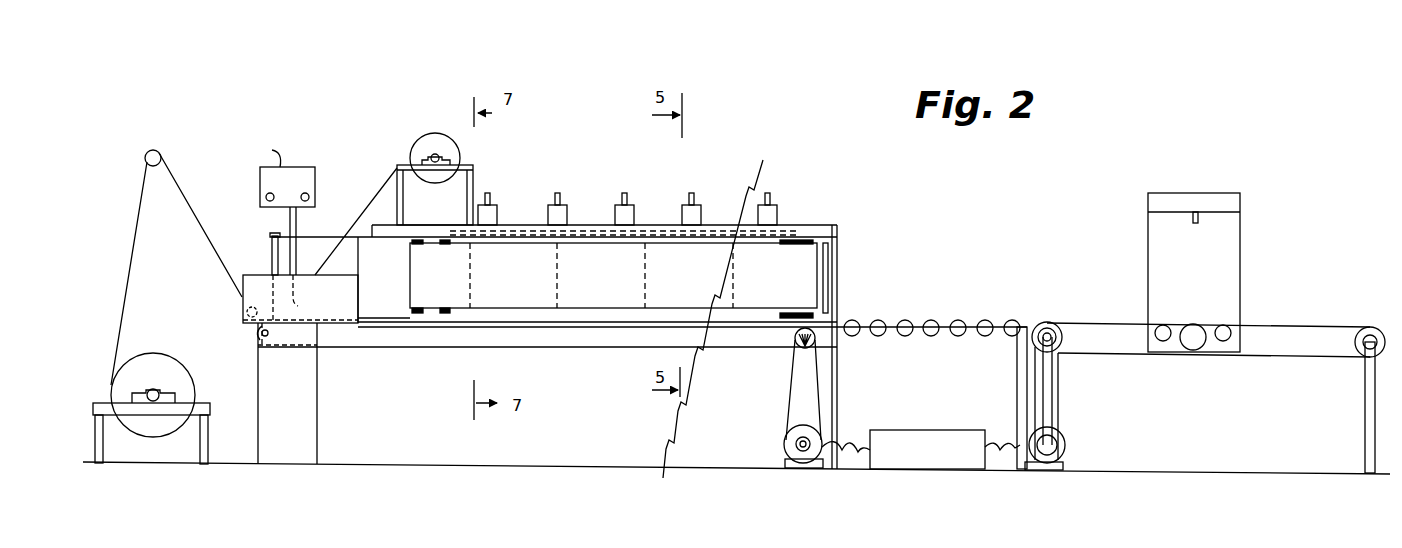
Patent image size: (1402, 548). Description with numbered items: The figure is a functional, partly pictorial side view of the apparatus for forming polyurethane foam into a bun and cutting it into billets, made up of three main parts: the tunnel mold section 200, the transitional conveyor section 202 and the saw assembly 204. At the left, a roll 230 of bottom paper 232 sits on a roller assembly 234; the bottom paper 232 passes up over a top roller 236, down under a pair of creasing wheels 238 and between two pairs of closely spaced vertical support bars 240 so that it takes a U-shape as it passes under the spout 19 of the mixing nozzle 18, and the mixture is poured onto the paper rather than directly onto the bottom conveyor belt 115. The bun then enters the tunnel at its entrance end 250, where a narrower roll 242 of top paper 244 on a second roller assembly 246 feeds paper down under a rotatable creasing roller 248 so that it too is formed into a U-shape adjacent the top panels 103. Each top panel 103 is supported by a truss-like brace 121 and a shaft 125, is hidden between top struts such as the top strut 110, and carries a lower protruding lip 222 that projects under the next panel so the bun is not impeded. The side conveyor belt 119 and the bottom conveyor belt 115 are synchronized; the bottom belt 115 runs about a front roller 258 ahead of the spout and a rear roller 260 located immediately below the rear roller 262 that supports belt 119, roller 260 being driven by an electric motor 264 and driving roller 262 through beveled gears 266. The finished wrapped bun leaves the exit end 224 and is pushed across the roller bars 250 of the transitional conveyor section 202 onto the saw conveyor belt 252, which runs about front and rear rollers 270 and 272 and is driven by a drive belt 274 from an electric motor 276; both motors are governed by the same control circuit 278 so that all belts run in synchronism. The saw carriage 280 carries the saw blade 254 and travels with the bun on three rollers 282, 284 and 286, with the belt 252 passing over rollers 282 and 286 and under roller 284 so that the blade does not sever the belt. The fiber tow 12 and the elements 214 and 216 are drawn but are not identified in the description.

The fiber tow 12 is at (522, 220).
The mixing nozzle 18 is at (296, 175).
The measuring spout 19 is at (297, 258).
The top panels 103 is at (598, 228).
The top strut 110 is at (818, 232).
The bottom conveyor belt 115 is at (437, 348).
The right side conveyor belt 119 is at (706, 277).
The truss-like brace 121 is at (634, 220).
The shaft 125 is at (618, 205).
The tunnel mold section 200 is at (643, 364).
The transitional conveyor section 202 is at (933, 355).
The saw assembly 204 is at (1273, 377).
The belt support 214 is at (806, 268).
The lower frame rail 216 is at (834, 320).
The lower protruding lip 222 is at (530, 238).
The exit end 224 is at (850, 241).
The roll of bottom paper 230 is at (157, 353).
The bottom paper 232 is at (140, 243).
The roller assembly 234 is at (194, 362).
The top roller 236 is at (155, 150).
The creasing wheels 238 is at (245, 310).
The vertical support bars 240 is at (270, 253).
The roll of top paper 242 is at (440, 138).
The top paper 244 is at (391, 190).
The second roller assembly 246 is at (472, 142).
The creasing roller 248 is at (368, 224).
The entrance end / roller bars 250 is at (378, 289).
The saw conveyor belt 252 is at (1067, 320).
The saw blade 254 is at (1202, 220).
The front roller 258 is at (273, 350).
The rear roller 260 is at (808, 350).
The rear roller 262 is at (834, 278).
The electric motor 264 is at (785, 440).
The beveled gears 266 is at (818, 343).
The front roller 270 is at (1036, 322).
The rear roller 272 is at (1370, 327).
The drive belt 274 is at (1060, 379).
The electric motor 276 is at (1064, 443).
The control circuit 278 is at (917, 430).
The saw carriage 280 is at (1232, 193).
The roller 282 is at (1163, 325).
The roller 284 is at (1193, 327).
The roller 286 is at (1228, 325).